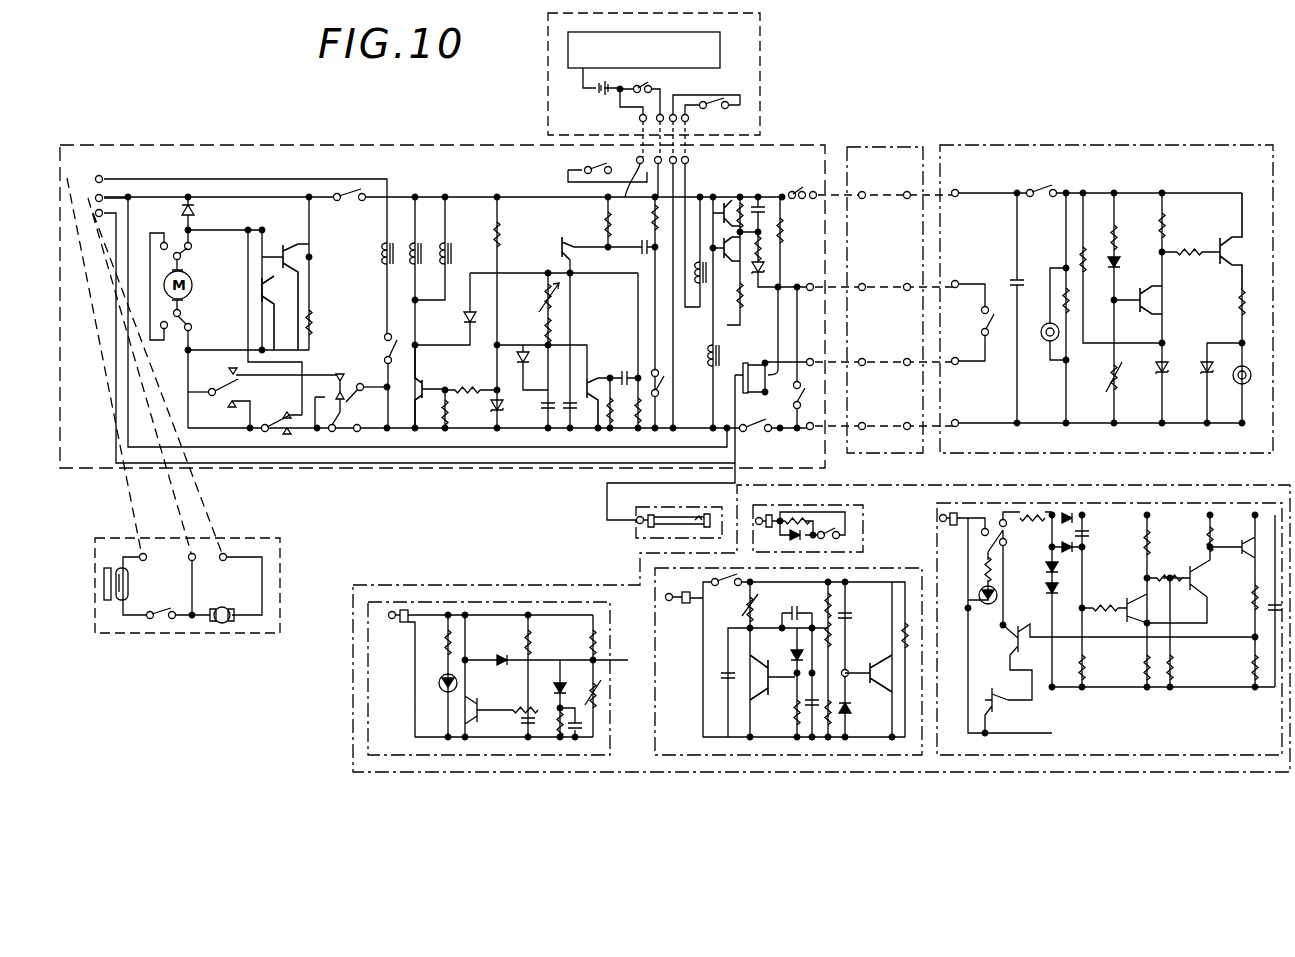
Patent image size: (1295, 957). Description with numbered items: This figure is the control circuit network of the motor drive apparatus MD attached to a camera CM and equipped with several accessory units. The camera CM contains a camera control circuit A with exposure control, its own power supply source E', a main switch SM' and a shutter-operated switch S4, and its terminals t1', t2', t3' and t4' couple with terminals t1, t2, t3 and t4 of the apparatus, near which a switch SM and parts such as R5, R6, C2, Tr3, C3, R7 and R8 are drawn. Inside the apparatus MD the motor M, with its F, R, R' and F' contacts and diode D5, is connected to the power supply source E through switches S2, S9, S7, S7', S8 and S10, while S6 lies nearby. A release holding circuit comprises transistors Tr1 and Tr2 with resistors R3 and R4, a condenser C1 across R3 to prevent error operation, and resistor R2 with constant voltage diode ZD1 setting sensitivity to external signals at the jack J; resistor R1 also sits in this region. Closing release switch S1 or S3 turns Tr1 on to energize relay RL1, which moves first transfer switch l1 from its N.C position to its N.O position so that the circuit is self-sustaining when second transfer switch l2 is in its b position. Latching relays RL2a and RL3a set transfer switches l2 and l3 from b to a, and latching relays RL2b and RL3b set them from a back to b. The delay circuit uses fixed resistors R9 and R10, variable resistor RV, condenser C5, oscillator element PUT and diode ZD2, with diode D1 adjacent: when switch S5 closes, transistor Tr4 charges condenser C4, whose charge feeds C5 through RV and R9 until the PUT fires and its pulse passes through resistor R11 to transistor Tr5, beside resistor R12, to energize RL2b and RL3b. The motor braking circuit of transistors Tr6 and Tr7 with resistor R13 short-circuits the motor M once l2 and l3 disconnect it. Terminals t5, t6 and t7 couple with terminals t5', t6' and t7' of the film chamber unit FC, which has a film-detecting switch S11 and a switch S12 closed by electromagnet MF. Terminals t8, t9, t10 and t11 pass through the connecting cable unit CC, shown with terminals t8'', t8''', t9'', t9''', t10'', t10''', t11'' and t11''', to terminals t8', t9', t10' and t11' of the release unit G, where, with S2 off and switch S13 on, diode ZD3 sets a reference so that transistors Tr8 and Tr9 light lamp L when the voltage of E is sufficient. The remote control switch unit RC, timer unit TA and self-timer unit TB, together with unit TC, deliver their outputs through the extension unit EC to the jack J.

The apparatus MD is at (355, 145).
The terminal t5 is at (105, 169).
The terminal t6 is at (119, 178).
The terminal t7 is at (133, 186).
The diode D5 is at (201, 220).
The switch S7 is at (167, 235).
The forward contact F is at (194, 253).
The reverse contact R is at (151, 286).
The reverse contact R' is at (153, 314).
The motor M is at (222, 623).
The forward contact F' is at (194, 317).
The switch S7' is at (171, 341).
The transistor Tr6 is at (293, 238).
The transistor Tr7 is at (268, 308).
The resistor R13 is at (327, 322).
The switch S9 is at (350, 206).
The second transfer switch l2 is at (213, 397).
The b position b is at (274, 388).
The a position a is at (260, 424).
The third transfer switch l3 is at (278, 418).
The NO position N.O is at (336, 372).
The NC position N.C is at (344, 410).
The first transfer switch l1 is at (370, 375).
The switch S8 is at (375, 413).
The switch S6 is at (379, 381).
The latching relay RL2a is at (382, 250).
The latching relay RL3b is at (415, 237).
The latching relay RL2b is at (452, 248).
The fixed resistor R10 is at (515, 312).
The transistor Tr5 is at (430, 386).
The resistor R11 is at (471, 381).
The resistor R12 is at (462, 409).
The constant voltage diode ZD2 is at (514, 410).
The diode D1 is at (526, 309).
The variable resistor RV is at (533, 350).
The fixed resistor R9 is at (552, 330).
The oscillator element PUT is at (542, 357).
The condenser C5 is at (543, 393).
The condenser C4 is at (566, 344).
The transistor Tr4 is at (585, 252).
The resistor R6 is at (597, 222).
The terminal t1 is at (628, 189).
The capacitor C2 is at (641, 238).
The resistor R5 is at (646, 312).
The switch S5 is at (665, 375).
The terminal t3 is at (666, 296).
The terminal t4 is at (694, 231).
The terminal t2 is at (657, 177).
The transistor Tr3 is at (603, 390).
The capacitor C3 is at (627, 368).
The resistor R8 is at (602, 403).
The resistor R7 is at (631, 350).
The latching relay RL3a is at (700, 306).
The relay RL1 is at (713, 353).
The transistor Tr1 is at (724, 195).
The transistor Tr2 is at (728, 257).
The resistor R3 is at (738, 180).
The resistor R4 is at (751, 295).
The condenser C1 is at (764, 202).
The resistor R2 is at (765, 244).
The constant voltage diode ZD1 is at (770, 300).
The resistor R1 is at (794, 242).
The terminal t9 is at (808, 275).
The jack J is at (750, 366).
The terminal t10 is at (794, 352).
The release switch S3 is at (810, 357).
The terminal t11 is at (817, 416).
The switch S10 is at (756, 416).
The main switch S2 is at (796, 186).
The terminal t8 is at (810, 184).
The switch SM is at (579, 151).
The camera CM is at (762, 78).
The camera control circuit A is at (720, 50).
The power supply source E' is at (591, 85).
The main switch SM' is at (685, 91).
The terminal t1' is at (601, 123).
The terminal t2' is at (627, 133).
The terminal t3' is at (727, 126).
The switch S4 is at (720, 114).
The terminal t4' is at (698, 131).
The connecting cable unit CC is at (858, 147).
The terminal t8'' is at (863, 208).
The terminal t8''' is at (912, 208).
The terminal t9'' is at (863, 299).
The terminal t9''' is at (910, 299).
The terminal t10'' is at (868, 379).
The terminal t10''' is at (913, 379).
The terminal t11'' is at (868, 437).
The terminal t11''' is at (913, 437).
The release unit G is at (1098, 145).
The terminal t8' is at (982, 206).
The terminal t9' is at (966, 296).
The terminal t10' is at (966, 365).
The terminal t11' is at (982, 435).
The release switch S1 is at (1000, 321).
The switch S13 is at (1129, 202).
The power supply source E is at (1120, 308).
The transistor Tr8 is at (1138, 284).
The constant voltage diode ZD3 is at (1179, 383).
The transistor Tr9 is at (1220, 241).
The lamp L is at (1249, 375).
The film chamber unit FC is at (280, 568).
The terminal t5' is at (147, 582).
The terminal t6' is at (204, 585).
The terminal t7' is at (241, 571).
The switch S11 is at (179, 603).
The switch S12 is at (139, 584).
The electromagnet MF is at (108, 600).
The extension unit EC is at (690, 507).
The remote control switch unit RC is at (863, 522).
The timer circuit TC is at (462, 602).
The timer unit TA is at (885, 568).
The self-timer unit TB is at (1128, 503).